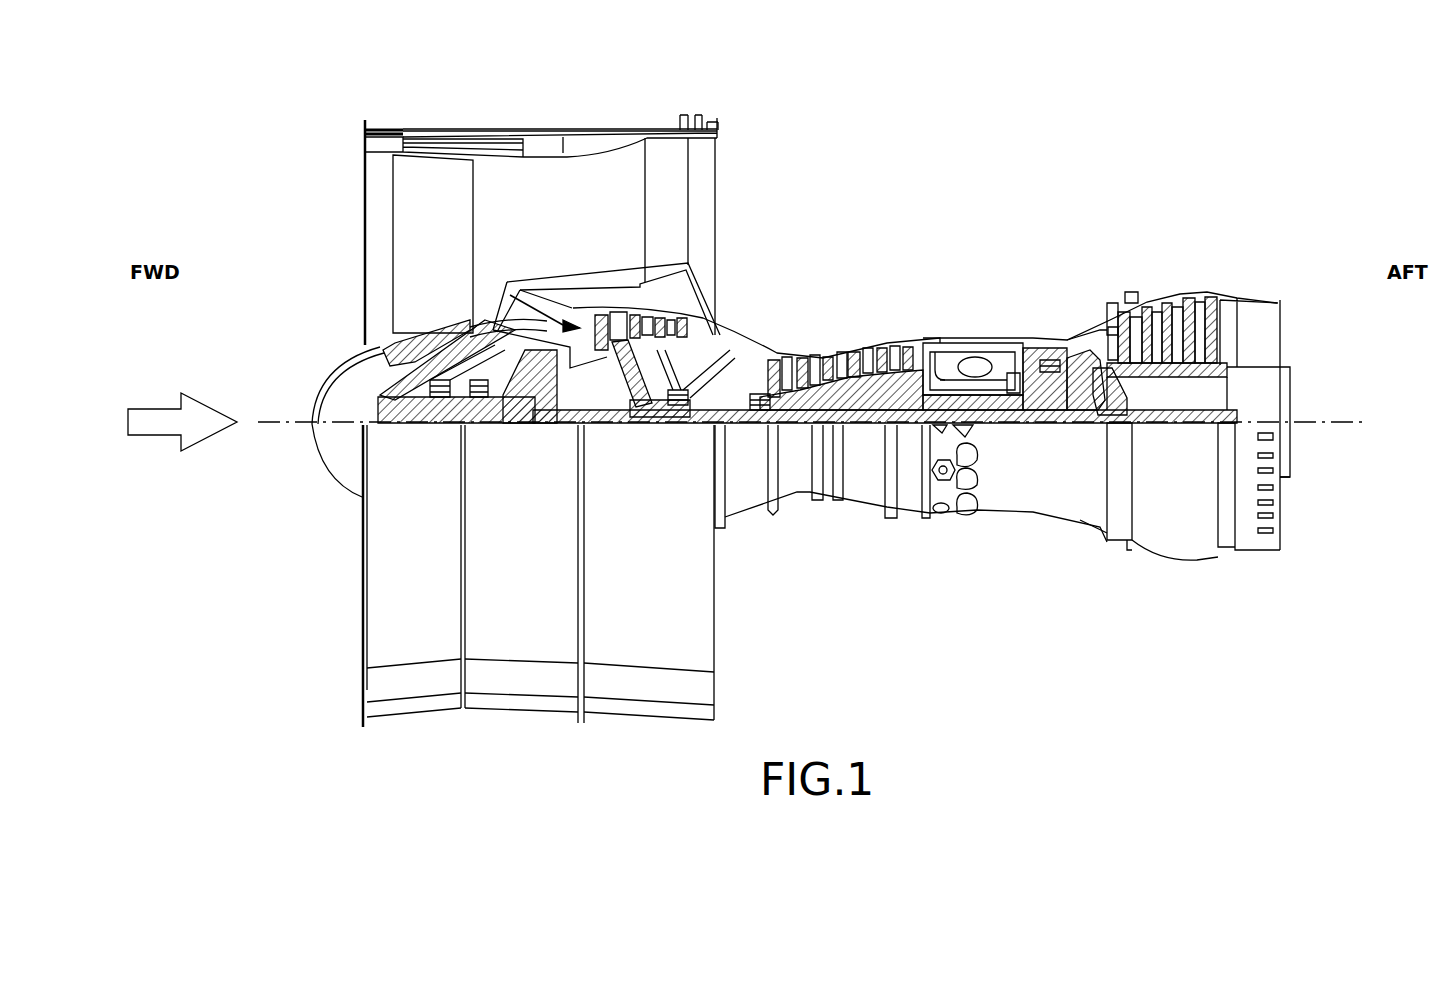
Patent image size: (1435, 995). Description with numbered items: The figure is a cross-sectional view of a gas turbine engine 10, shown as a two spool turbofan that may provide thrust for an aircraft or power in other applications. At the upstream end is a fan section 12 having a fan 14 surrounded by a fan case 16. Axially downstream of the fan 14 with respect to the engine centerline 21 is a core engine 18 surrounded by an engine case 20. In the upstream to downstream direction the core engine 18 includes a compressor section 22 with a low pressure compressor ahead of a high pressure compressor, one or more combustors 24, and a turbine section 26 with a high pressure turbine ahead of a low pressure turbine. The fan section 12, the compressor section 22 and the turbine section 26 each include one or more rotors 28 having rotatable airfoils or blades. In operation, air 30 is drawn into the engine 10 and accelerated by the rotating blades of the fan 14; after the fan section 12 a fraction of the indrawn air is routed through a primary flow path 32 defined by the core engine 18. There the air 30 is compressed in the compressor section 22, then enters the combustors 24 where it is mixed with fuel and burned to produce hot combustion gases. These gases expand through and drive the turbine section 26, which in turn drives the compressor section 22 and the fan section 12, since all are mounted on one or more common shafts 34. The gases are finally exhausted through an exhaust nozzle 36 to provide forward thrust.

The gas turbine engine 10 is at (826, 231).
The fan section 12 is at (492, 114).
The fan 14 is at (410, 228).
The fan case 16 is at (698, 658).
The core engine 18 is at (931, 385).
The engine case 20 is at (1060, 493).
The engine centerline 21 is at (1318, 422).
The compressor section 22 is at (730, 330).
The combustor 24 is at (975, 360).
The turbine section 26 is at (1080, 340).
The rotor 28 is at (395, 342).
The air 30 is at (158, 410).
The primary flow path 32 is at (508, 305).
The common shaft 34 is at (733, 425).
The exhaust nozzle 36 is at (1250, 300).